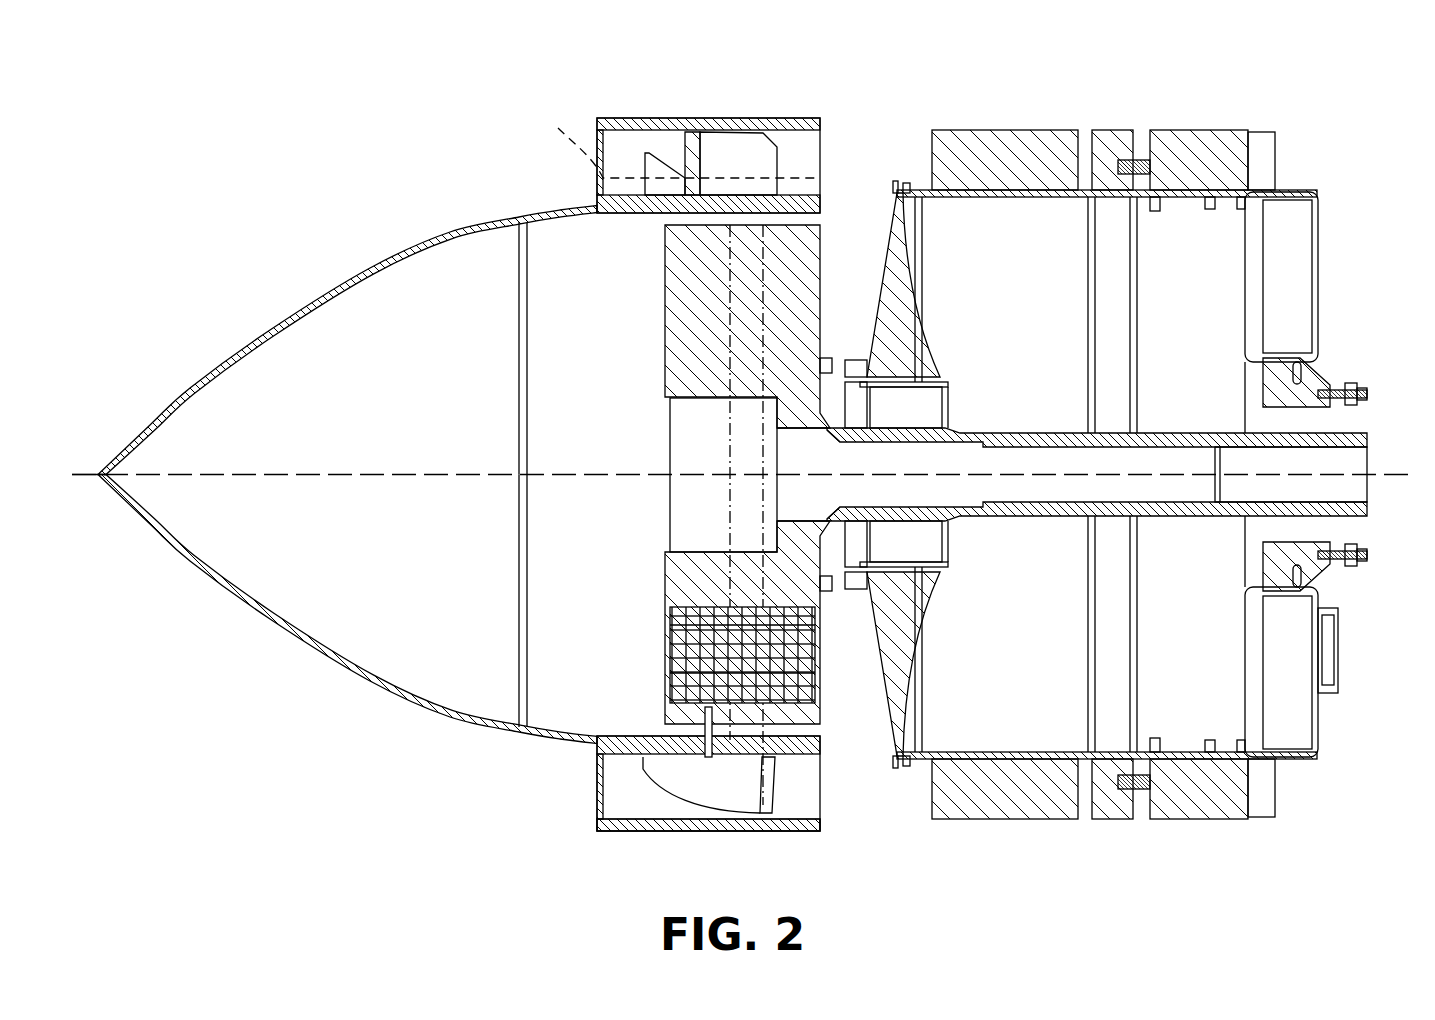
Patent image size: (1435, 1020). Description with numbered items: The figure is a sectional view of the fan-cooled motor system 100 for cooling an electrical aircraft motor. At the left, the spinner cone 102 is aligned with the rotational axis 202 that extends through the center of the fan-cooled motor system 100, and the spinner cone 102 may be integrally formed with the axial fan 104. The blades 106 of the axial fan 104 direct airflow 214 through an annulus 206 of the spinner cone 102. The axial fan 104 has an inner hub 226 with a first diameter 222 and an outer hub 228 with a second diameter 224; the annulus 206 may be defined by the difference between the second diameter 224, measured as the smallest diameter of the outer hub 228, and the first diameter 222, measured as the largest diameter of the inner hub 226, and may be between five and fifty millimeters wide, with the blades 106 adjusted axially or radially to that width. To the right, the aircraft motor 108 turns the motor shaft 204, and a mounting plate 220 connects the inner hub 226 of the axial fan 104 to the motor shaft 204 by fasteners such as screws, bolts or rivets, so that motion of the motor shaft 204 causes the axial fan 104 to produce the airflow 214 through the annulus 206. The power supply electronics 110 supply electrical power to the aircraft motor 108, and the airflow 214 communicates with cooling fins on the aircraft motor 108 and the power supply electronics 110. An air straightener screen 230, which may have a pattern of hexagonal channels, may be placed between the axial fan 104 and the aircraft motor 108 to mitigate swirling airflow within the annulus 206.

The fan-cooled motor system 100 is at (150, 78).
The spinner cone 102 is at (360, 682).
The axial fan 104 is at (643, 826).
The blades 106 is at (745, 810).
The aircraft motor 108 is at (975, 133).
The power supply electronics 110 is at (1195, 133).
The rotational axis 202 is at (76, 487).
The motor shaft 204 is at (787, 503).
The annulus 206 is at (727, 178).
The airflow 214 is at (572, 152).
The mounting plate 220 is at (812, 258).
The first diameter 222 is at (718, 645).
The second diameter 224 is at (765, 775).
The inner hub 226 is at (690, 744).
The outer hub 228 is at (795, 824).
The air straightener screen 230 is at (822, 193).